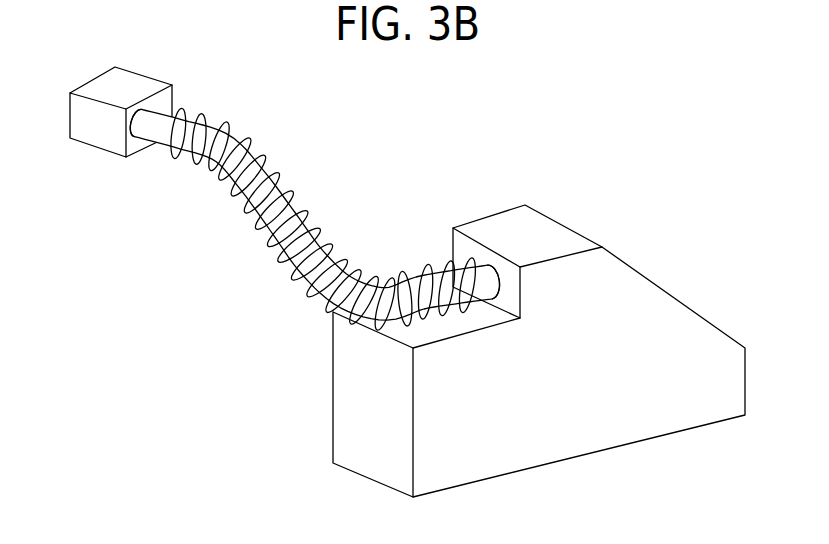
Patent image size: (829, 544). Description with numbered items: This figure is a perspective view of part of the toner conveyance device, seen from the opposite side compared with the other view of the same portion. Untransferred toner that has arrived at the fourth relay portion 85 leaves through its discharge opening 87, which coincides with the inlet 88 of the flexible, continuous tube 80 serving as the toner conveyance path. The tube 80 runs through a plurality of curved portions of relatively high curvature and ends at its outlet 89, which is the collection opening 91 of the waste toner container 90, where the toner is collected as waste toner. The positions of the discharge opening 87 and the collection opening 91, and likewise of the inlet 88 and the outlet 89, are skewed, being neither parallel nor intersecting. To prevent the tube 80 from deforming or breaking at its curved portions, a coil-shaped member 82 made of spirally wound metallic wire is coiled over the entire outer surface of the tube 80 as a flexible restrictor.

The tube 80 is at (393, 298).
The coil-shaped member 82 is at (266, 244).
The fourth relay portion 85 is at (91, 138).
The discharge opening 87 is at (142, 154).
The inlet 88 is at (140, 150).
The outlet 89 is at (518, 245).
The waste toner container 90 is at (596, 437).
The collection opening 91 is at (515, 260).